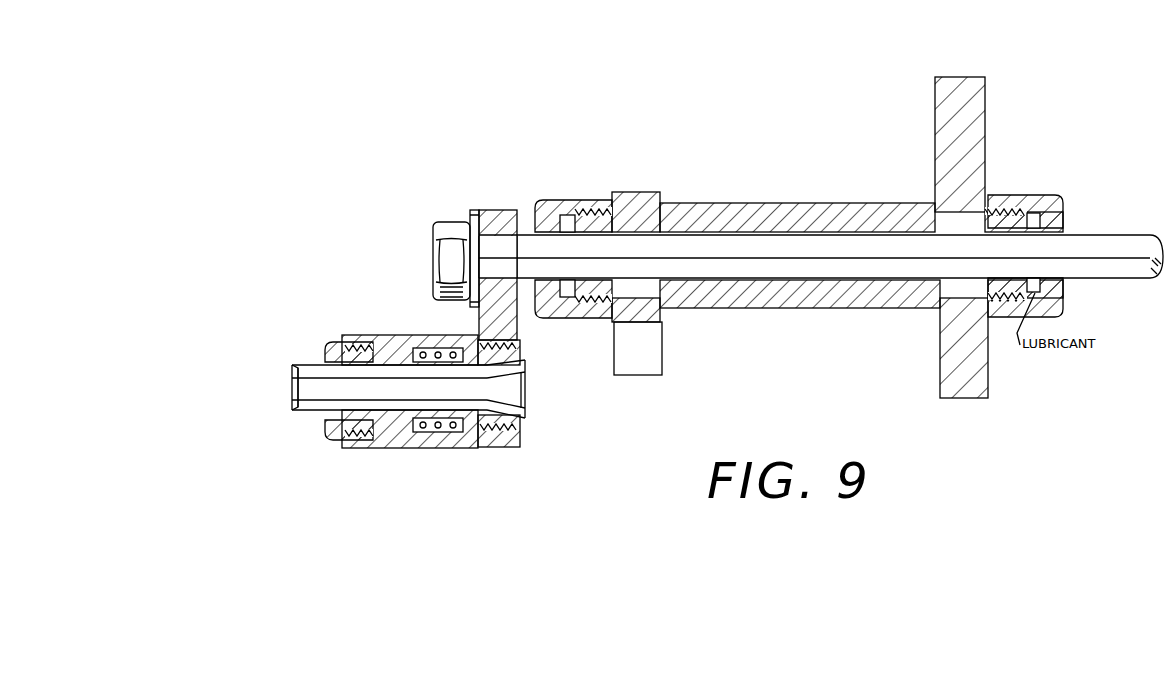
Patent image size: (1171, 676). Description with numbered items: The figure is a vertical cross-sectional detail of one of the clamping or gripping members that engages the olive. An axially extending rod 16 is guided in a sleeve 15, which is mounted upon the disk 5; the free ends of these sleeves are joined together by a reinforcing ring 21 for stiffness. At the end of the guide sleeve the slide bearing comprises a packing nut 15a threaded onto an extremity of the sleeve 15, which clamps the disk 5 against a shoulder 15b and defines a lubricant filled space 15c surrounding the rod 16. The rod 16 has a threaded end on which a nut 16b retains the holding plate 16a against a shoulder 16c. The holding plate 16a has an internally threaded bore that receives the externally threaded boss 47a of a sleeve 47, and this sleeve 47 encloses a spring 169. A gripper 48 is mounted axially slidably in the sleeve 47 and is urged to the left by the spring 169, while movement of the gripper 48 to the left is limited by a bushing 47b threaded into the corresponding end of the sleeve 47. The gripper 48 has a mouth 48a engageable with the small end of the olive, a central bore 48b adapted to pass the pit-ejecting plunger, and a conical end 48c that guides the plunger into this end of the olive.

The disk 5 is at (987, 105).
The sleeve 15 is at (825, 305).
The packing nut 15a is at (1065, 303).
The shoulder 15b is at (940, 205).
The lubricant filled space 15c is at (1035, 220).
The rod 16 is at (783, 252).
The holding plate 16a is at (500, 312).
The nut 16b is at (447, 228).
The shoulder 16c is at (505, 243).
The reinforcing ring 21 is at (633, 192).
The sleeve 47 is at (365, 447).
The externally threaded boss 47a is at (520, 438).
The bushing 47b is at (332, 435).
The gripper 48 is at (400, 425).
The mouth 48a is at (300, 413).
The central bore 48b is at (530, 400).
The conical end 48c is at (525, 380).
The spring 169 is at (458, 440).